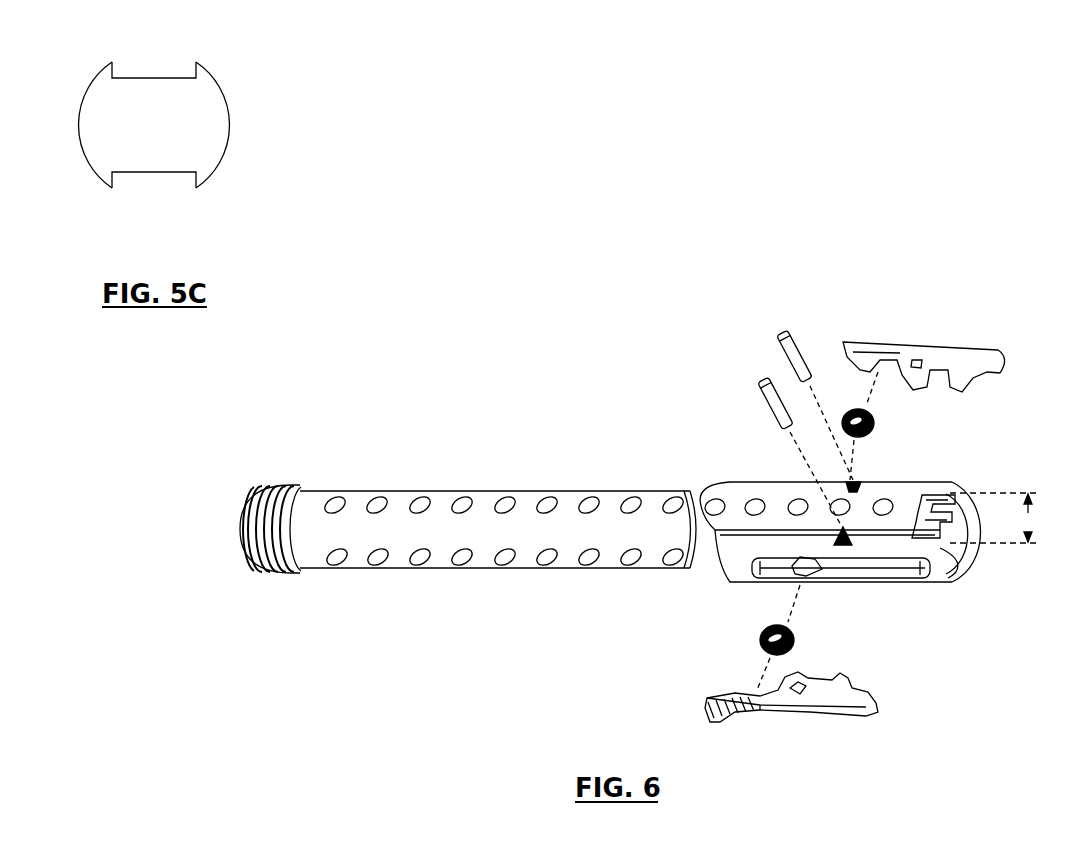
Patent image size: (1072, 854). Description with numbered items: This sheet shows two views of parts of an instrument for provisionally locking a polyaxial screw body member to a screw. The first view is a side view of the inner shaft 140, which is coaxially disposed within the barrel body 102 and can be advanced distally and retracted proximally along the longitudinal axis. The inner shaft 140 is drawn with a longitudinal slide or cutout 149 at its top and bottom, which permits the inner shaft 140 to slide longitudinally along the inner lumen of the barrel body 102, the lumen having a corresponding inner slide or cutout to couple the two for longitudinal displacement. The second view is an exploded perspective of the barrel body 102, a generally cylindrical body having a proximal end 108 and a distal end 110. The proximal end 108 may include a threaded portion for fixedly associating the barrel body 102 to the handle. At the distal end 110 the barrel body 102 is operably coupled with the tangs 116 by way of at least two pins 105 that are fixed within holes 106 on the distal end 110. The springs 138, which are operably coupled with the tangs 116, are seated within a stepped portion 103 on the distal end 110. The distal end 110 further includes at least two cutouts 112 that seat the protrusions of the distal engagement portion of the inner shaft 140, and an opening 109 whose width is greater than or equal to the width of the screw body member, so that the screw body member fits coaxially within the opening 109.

In FIG. 5C, the inner shaft 140 is at (202, 131).
In FIG. 5C, the longitudinal slide or cutout 149 is at (160, 75).
In FIG. 6, the barrel body 102 is at (487, 494).
In FIG. 6, the proximal end 108 is at (272, 487).
In FIG. 6, the stepped portion 103 is at (803, 578).
In FIG. 6, the pins 105 is at (780, 335).
In FIG. 6, the holes 106 is at (857, 483).
In FIG. 6, the opening 109 is at (962, 540).
In FIG. 6, the distal end 110 is at (640, 525).
In FIG. 6, the cutouts 112 is at (969, 572).
In FIG. 6, the tangs 116 is at (943, 355).
In FIG. 6, the springs 138 is at (876, 427).